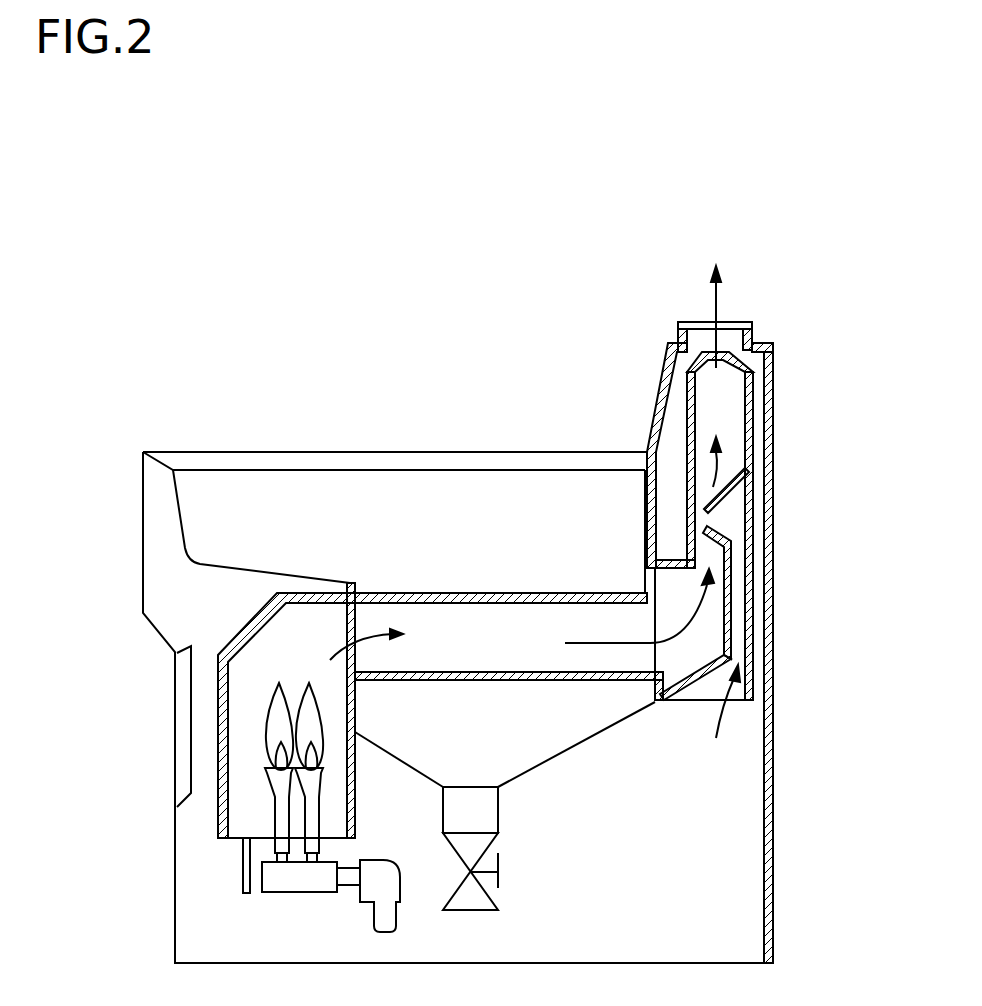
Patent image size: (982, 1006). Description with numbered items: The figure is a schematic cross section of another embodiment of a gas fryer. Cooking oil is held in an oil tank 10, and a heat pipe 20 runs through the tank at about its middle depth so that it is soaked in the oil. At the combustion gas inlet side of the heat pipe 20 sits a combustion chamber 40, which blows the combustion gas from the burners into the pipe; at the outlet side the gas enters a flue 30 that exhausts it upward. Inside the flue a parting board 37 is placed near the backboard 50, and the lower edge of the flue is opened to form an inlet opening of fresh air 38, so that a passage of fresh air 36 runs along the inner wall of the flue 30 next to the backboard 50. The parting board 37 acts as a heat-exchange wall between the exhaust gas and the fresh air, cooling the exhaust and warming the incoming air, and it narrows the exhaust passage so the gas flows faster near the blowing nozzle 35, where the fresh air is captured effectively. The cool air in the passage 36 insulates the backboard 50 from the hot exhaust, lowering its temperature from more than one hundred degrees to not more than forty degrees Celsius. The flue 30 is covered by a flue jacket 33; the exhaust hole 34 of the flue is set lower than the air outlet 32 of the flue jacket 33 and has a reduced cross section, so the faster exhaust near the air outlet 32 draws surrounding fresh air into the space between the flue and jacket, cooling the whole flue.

The oil tank 10 is at (418, 505).
The heat pipe 20 is at (510, 618).
The flue 30 is at (727, 407).
The air outlet of the flue jacket 32 is at (697, 320).
The flue jacket 33 is at (660, 388).
The exhaust hole 34 is at (722, 352).
The blowing nozzle 35 is at (720, 520).
The passage of fresh air 36 is at (735, 588).
The parting board 37 is at (683, 695).
The inlet opening of fresh air 38 is at (708, 693).
The combustion chamber 40 is at (263, 632).
The backboard 50 is at (773, 767).